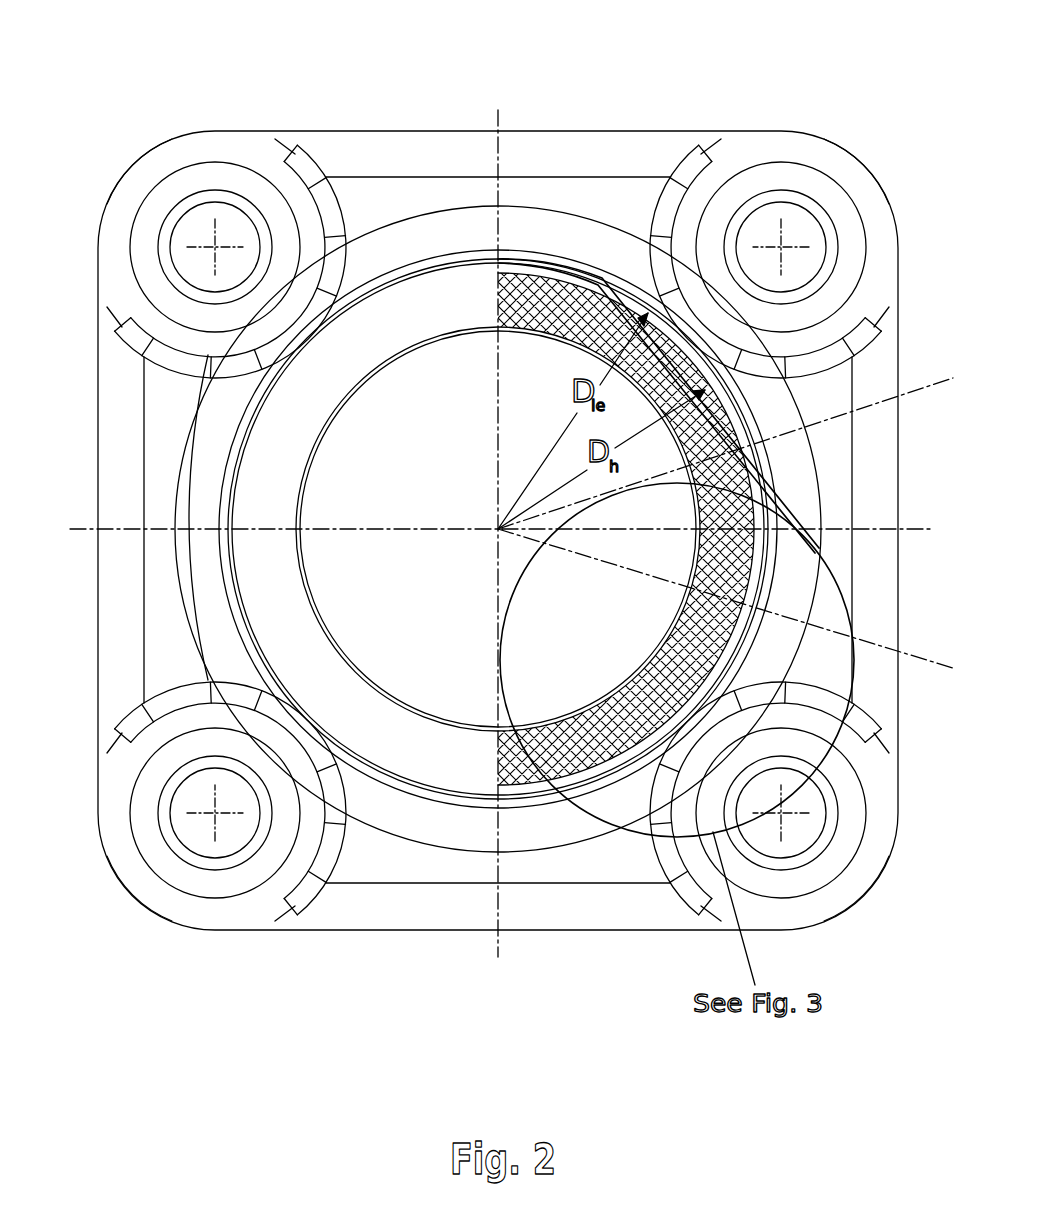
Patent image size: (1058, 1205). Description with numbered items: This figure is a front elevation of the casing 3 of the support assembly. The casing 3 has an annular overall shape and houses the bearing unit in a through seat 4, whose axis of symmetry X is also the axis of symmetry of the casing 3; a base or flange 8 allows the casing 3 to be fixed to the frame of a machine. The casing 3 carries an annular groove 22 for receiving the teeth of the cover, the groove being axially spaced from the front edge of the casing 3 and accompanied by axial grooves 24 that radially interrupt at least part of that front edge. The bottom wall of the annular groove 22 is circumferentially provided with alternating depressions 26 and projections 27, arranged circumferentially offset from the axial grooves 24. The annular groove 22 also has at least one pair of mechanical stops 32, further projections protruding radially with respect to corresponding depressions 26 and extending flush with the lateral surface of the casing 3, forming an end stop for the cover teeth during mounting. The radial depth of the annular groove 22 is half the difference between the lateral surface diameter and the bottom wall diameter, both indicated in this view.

The casing 3 is at (292, 70).
The through seat 4 is at (303, 505).
The flange 8 is at (544, 156).
The annular groove 22 is at (753, 380).
The axial grooves 24 is at (323, 700).
The depressions 26 is at (540, 790).
The projections 27 is at (600, 780).
The mechanical stops 32 is at (757, 530).